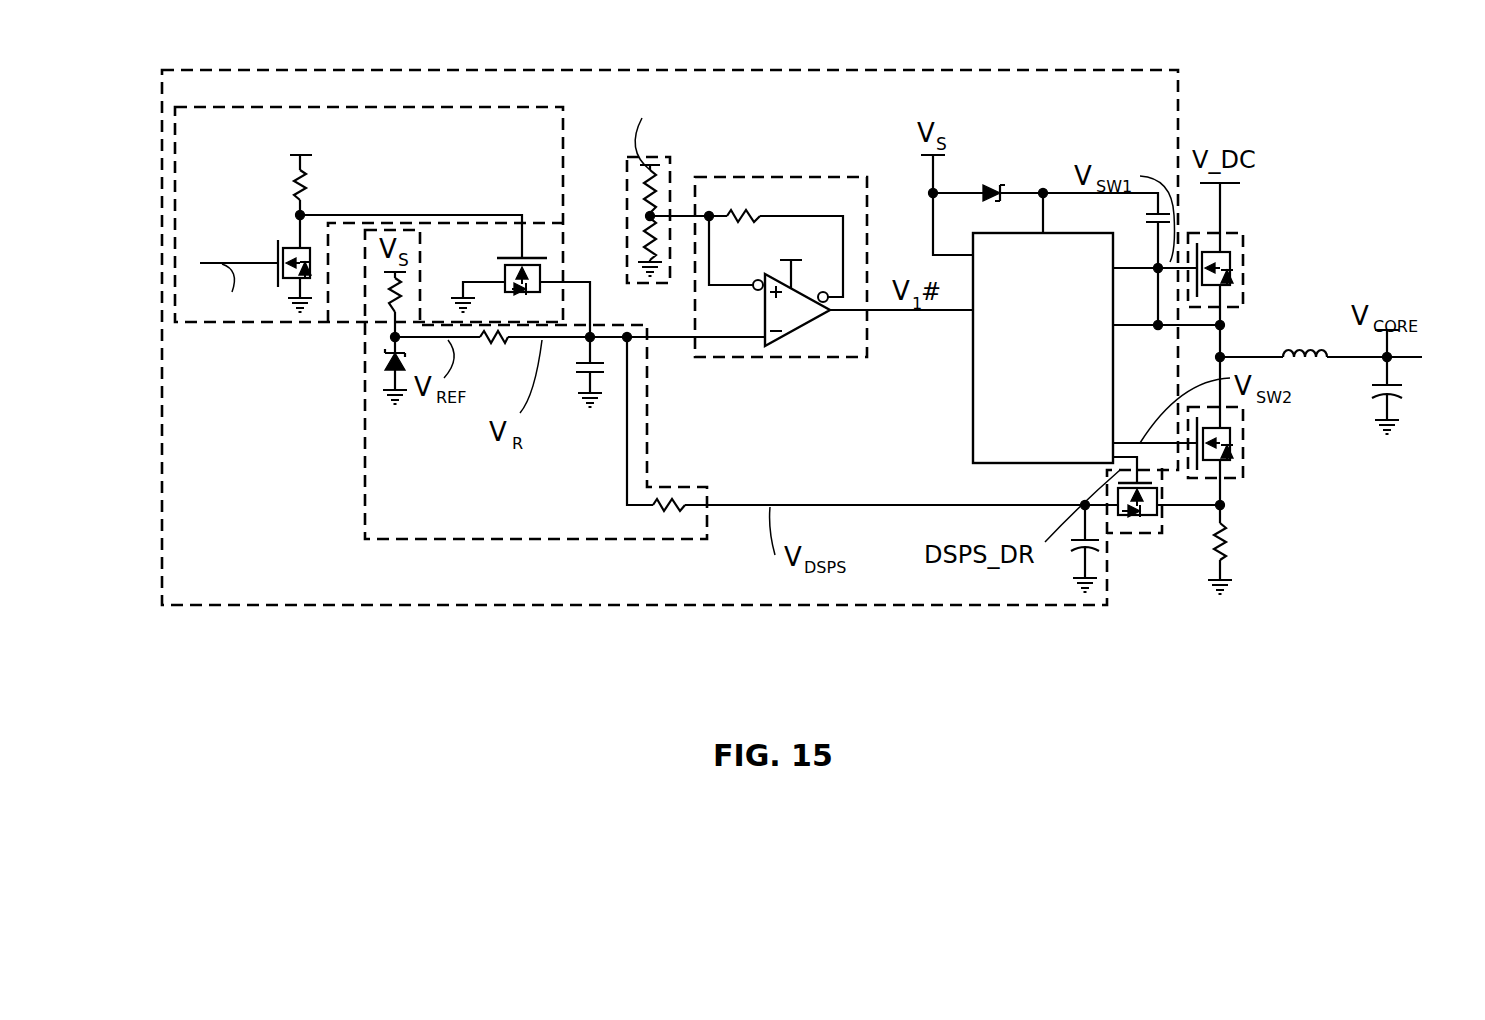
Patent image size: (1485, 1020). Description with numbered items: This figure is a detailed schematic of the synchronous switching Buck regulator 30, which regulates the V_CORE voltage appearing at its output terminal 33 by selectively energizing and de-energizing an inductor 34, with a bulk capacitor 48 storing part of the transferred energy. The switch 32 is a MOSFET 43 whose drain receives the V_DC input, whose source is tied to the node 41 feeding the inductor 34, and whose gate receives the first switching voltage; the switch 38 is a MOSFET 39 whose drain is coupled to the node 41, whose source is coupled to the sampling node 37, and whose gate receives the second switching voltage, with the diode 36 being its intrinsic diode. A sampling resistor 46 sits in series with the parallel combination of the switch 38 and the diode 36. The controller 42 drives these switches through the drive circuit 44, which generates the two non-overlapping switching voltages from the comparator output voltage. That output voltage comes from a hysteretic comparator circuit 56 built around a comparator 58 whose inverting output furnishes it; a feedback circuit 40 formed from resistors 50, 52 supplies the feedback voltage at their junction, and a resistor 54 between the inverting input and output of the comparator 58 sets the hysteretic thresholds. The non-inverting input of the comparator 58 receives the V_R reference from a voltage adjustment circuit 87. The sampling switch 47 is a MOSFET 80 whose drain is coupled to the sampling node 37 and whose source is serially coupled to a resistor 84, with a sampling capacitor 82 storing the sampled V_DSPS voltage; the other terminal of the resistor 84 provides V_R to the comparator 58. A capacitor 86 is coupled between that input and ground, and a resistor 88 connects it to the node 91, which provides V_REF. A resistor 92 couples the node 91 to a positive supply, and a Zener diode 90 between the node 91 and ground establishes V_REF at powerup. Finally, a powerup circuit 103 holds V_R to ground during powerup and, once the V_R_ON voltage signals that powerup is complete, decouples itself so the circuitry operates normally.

The synchronous switching Buck regulator 30 is at (1152, 618).
The switch 32 is at (1243, 258).
The output terminal 33 is at (1410, 357).
The inductor 34 is at (1283, 350).
The diode 36 is at (1246, 442).
The sampling node 37 is at (1223, 505).
The switch 38 is at (1243, 455).
The MOSFET 39 is at (1225, 463).
The feedback circuit 40 is at (639, 192).
The node 41 is at (1223, 325).
The controller 42 is at (822, 607).
The MOSFET 43 is at (1207, 250).
The switch drive circuit 44 is at (1115, 360).
The sampling resistor 46 is at (1228, 548).
The switch 47 is at (1163, 523).
The bulk capacitor 48 is at (1395, 388).
The resistor 50 is at (655, 175).
The resistor 52 is at (648, 237).
The resistor 54 is at (748, 210).
The hysteretic comparator circuit 56 is at (758, 288).
The comparator 58 is at (764, 320).
The MOSFET 80 is at (1157, 490).
The sampling capacitor 82 is at (1072, 540).
The resistor 84 is at (672, 510).
The capacitor 86 is at (583, 380).
The voltage adjustment circuit 87 is at (580, 540).
The resistor 88 is at (509, 343).
The Zener diode 90 is at (390, 372).
The node 91 is at (392, 337).
The resistor 92 is at (392, 292).
The powerup circuit 103 is at (183, 325).